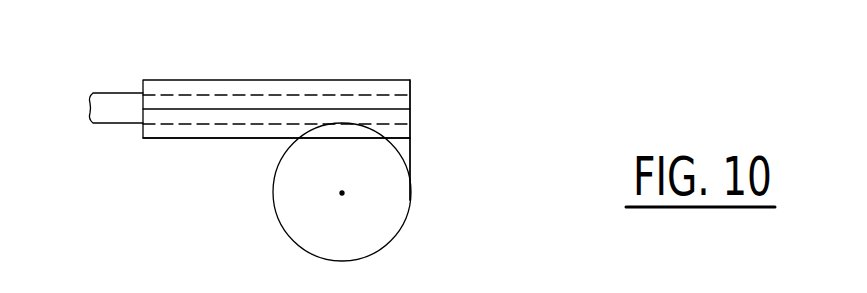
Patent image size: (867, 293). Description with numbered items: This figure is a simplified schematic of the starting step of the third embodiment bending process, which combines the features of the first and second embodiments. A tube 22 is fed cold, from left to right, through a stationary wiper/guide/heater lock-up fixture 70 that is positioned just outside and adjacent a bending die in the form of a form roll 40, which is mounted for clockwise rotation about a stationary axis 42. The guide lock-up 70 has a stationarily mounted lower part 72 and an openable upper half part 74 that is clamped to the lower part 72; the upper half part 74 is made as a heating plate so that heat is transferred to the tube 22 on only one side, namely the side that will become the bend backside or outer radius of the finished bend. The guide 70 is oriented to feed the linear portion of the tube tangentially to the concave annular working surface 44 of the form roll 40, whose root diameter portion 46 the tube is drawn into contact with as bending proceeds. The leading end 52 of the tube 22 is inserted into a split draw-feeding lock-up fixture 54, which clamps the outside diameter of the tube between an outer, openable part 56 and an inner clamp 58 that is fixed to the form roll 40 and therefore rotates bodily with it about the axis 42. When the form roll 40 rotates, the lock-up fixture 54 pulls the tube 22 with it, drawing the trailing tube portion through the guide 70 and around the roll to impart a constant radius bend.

The tube 22 is at (187, 92).
The form roll 40 is at (383, 215).
The stationary axis 42 is at (344, 192).
The concave annular working surface 44 is at (303, 180).
The root diameter portion 46 is at (307, 201).
The leading end 52 is at (380, 97).
The draw-feeding lock-up fixture 54 is at (413, 96).
The outer openable part 56 is at (367, 80).
The inner clamp 58 is at (413, 137).
The wiper/guide/heater lock-up fixture 70 is at (213, 140).
The lower part 72 is at (241, 138).
The upper half part 74 is at (258, 79).